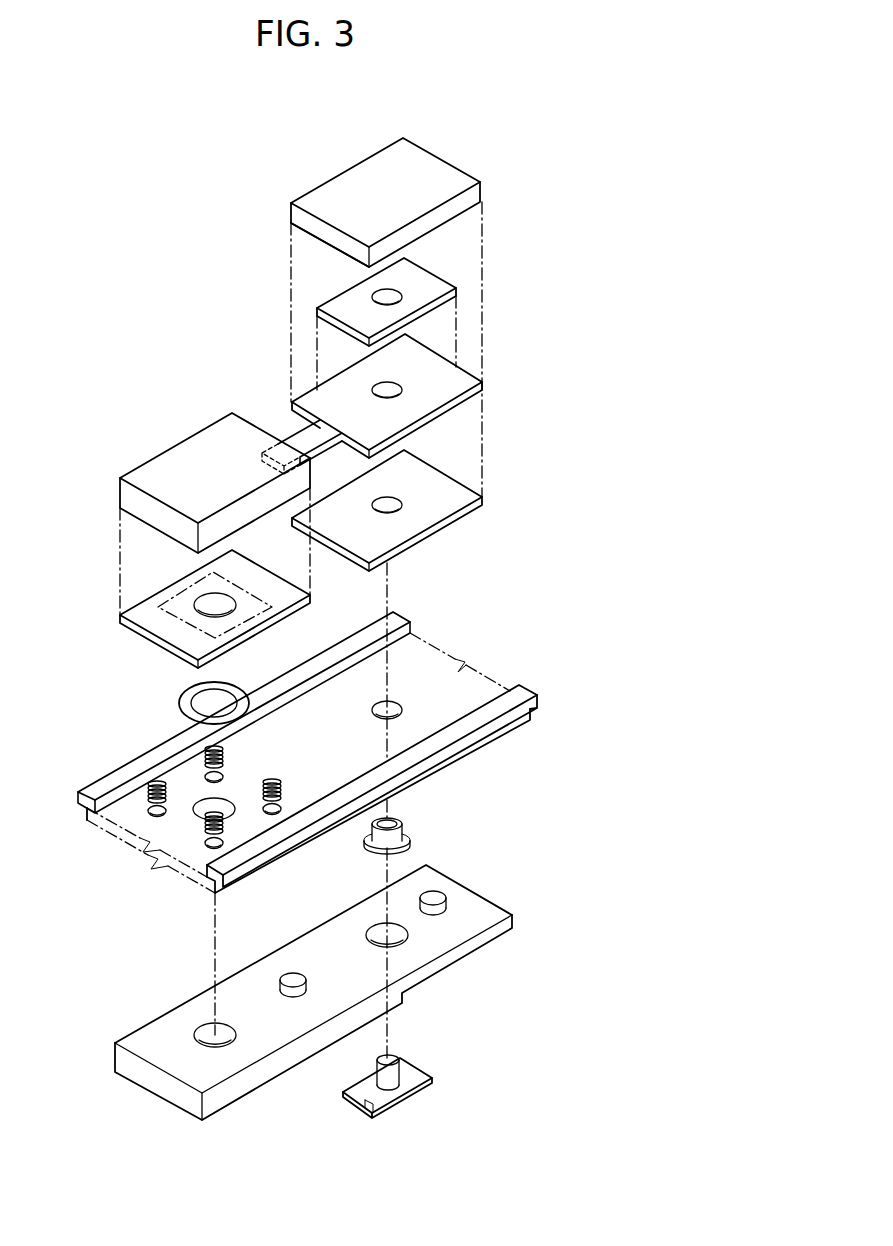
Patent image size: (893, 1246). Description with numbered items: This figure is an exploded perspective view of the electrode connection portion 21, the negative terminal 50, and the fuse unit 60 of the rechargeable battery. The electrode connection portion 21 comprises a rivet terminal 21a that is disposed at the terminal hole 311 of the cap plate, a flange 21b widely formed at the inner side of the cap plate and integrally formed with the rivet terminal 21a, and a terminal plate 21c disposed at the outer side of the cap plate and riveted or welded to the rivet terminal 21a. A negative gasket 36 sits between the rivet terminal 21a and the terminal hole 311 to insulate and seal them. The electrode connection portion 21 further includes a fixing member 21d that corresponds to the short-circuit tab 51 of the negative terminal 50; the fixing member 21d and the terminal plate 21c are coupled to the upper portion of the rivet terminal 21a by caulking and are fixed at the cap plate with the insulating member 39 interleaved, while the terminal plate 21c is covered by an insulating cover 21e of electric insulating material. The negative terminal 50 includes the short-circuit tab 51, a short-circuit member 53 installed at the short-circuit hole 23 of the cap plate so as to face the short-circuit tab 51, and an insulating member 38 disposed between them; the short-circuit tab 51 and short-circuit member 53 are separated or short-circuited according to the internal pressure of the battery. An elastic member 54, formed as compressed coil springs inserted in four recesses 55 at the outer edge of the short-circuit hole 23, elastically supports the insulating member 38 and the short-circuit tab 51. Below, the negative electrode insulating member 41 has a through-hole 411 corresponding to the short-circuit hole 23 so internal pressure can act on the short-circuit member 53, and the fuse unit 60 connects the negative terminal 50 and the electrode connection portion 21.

The electrode connection portion 21 is at (480, 148).
The rivet terminal 21a is at (390, 1077).
The flange 21b is at (422, 1083).
The terminal plate 21c is at (442, 283).
The fixing member 21d is at (470, 380).
The insulating cover 21e is at (480, 185).
The short-circuit hole 23 is at (135, 828).
The negative gasket 36 is at (407, 823).
The insulating member 38 is at (143, 624).
The insulating member 39 is at (460, 503).
The negative electrode insulating member 41 is at (122, 1063).
The negative terminal 50 is at (128, 438).
The short-circuit tab 51 is at (200, 442).
The short-circuit member 53 is at (182, 707).
The elastic member 54 is at (140, 792).
The recess 55 is at (146, 813).
The fuse unit 60 is at (293, 432).
The terminal hole 311 is at (395, 712).
The through-hole 411 is at (195, 1033).